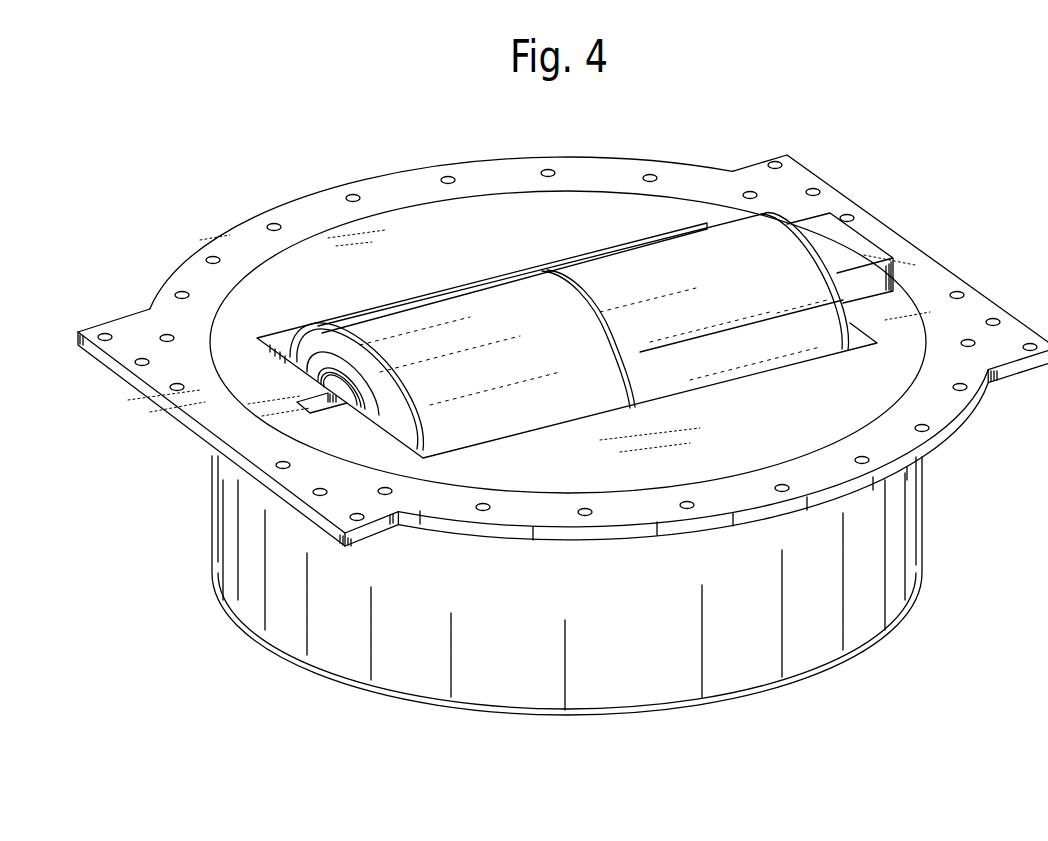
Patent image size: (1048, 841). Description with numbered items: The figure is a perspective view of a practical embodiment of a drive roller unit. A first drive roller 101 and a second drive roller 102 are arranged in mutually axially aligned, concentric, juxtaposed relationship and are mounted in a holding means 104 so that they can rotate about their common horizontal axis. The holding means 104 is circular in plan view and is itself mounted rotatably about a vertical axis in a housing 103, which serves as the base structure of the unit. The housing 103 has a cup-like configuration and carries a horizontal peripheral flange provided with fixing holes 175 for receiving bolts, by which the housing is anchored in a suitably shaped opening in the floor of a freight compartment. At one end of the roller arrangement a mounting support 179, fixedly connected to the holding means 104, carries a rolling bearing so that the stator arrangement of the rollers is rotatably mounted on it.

The first drive roller 101 is at (683, 250).
The second drive roller 102 is at (388, 322).
The housing 103 is at (988, 307).
The holding means 104 is at (514, 222).
The fixing holes 175 is at (271, 222).
The mounting support 179 is at (868, 250).